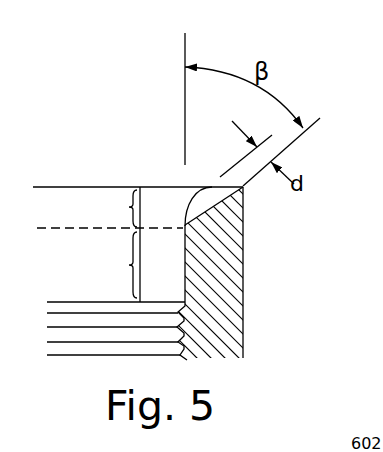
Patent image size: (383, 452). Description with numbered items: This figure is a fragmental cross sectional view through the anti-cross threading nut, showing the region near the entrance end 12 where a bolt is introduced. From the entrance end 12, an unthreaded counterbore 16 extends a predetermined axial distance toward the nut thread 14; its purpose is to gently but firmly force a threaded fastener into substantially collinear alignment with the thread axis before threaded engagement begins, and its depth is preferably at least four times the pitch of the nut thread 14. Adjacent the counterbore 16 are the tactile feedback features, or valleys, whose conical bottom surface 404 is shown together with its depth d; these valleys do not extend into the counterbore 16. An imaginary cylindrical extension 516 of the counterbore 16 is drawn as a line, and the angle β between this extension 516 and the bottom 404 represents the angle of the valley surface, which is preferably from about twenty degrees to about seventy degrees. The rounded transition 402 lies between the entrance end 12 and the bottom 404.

The imaginary cylindrical extension 516 is at (184, 50).
The rounded fillet edge 402 is at (199, 187).
The bottom of tactile feedback feature 404 is at (212, 213).
The entrance end 12 is at (115, 208).
The unthreaded counterbore 16 is at (115, 265).
The nut thread 14 is at (177, 333).